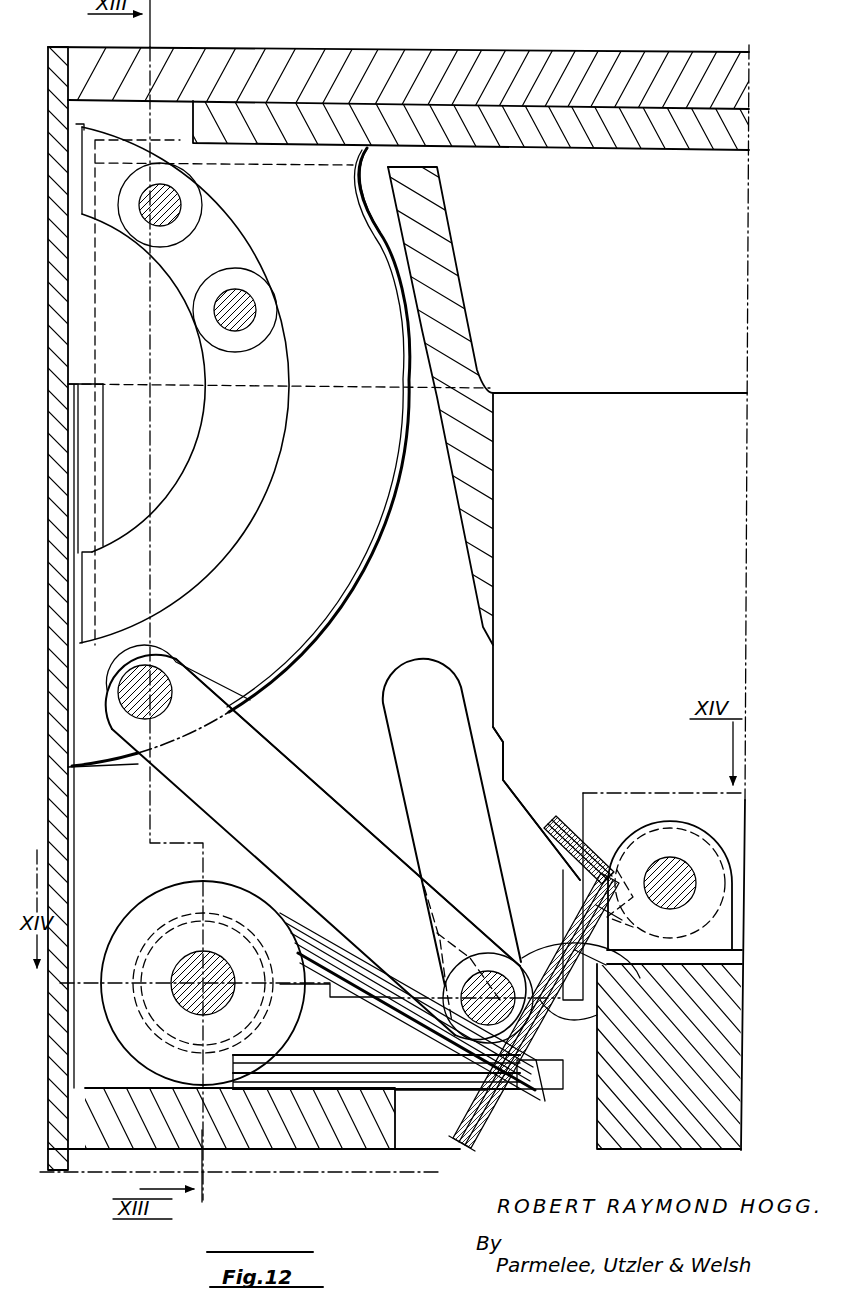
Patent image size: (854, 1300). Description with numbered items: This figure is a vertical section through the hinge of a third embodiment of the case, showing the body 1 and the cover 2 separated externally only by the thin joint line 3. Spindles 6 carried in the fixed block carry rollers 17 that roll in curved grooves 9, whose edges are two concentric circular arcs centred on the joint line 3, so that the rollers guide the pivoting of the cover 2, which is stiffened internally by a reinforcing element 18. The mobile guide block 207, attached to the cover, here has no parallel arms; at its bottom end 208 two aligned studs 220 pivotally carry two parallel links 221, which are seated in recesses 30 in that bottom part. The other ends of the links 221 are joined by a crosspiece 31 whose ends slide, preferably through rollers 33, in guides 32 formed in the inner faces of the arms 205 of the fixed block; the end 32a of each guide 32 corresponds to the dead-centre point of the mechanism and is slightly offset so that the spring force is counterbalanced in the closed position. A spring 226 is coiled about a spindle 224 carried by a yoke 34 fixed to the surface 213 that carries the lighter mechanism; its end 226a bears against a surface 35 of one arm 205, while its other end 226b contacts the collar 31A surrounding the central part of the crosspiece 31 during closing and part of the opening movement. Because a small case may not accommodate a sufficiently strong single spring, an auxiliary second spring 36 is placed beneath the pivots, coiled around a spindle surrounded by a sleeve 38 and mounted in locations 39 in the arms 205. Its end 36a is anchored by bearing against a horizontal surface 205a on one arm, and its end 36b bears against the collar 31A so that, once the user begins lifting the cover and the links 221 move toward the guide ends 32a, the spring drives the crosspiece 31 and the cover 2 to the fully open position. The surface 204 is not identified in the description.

The body of the case 1 is at (62, 520).
The cover 2 is at (62, 58).
The joint line 3 is at (62, 376).
The spindles 6 is at (178, 201).
The curved groove 9 is at (283, 446).
The roller 17 is at (190, 222).
The reinforcing element 18 is at (589, 140).
The recesses 30 is at (218, 683).
The crosspiece 31 is at (497, 947).
The collar 31A is at (397, 947).
The guides 32 is at (460, 732).
The end of guide 32a is at (530, 1034).
The roller 33 is at (468, 957).
The yoke 34 is at (630, 933).
The surface 35 is at (504, 781).
The second spring 36 is at (318, 921).
The end of second spring 36a is at (432, 1090).
The end of second spring 36b is at (400, 1024).
The sleeve 38 is at (157, 918).
The locations 39 is at (190, 1000).
The surface 204 is at (470, 418).
The arms of the fixed block 205 is at (417, 362).
The horizontal surface 205a is at (290, 1140).
The mobile guide block 207 is at (363, 238).
The bottom end of the mobile guide block 208 is at (326, 623).
The surface 213 is at (598, 958).
The studs 220 is at (193, 657).
The parallel links 221 is at (297, 766).
The spindle 224 is at (667, 860).
The spring 226 is at (597, 843).
The end of spring 226a is at (563, 817).
The end of spring 226b is at (487, 1131).